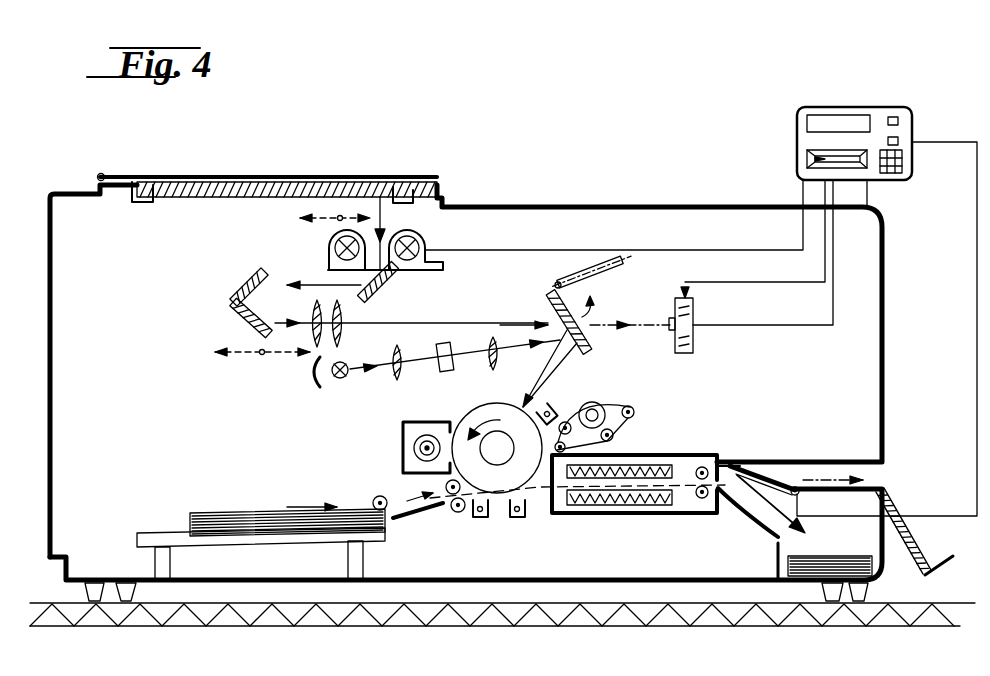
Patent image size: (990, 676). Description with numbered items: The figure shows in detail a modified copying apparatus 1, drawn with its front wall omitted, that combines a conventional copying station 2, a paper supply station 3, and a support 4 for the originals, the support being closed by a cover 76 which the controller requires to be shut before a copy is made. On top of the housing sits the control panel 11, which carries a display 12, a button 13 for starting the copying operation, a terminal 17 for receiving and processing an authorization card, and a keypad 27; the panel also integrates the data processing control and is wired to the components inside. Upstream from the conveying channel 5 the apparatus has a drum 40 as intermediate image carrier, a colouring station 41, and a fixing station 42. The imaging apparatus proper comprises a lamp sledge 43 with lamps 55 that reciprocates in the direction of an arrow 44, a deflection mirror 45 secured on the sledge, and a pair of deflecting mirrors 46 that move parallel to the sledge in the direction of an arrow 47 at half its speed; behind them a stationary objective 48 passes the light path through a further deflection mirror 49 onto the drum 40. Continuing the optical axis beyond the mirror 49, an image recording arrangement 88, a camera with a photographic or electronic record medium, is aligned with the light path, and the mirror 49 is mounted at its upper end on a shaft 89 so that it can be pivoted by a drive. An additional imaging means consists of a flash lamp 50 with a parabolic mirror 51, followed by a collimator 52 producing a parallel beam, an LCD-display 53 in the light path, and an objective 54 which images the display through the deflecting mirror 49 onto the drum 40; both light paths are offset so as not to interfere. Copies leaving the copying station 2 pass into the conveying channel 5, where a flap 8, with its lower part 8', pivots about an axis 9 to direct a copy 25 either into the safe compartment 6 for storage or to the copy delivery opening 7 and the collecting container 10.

The copying apparatus 1 is at (500, 120).
The copying station 2 is at (518, 239).
The paper supply station 3 is at (196, 518).
The support 4 is at (282, 192).
The conveying channel 5 is at (728, 465).
The safe compartment 6 is at (777, 538).
The copy delivery opening 7 is at (887, 464).
The flap 8 is at (762, 458).
The deflector guide lower part 8' is at (764, 460).
The axis 9 is at (800, 496).
The collecting container 10 is at (953, 560).
The control panel 11 is at (908, 107).
The display 12 is at (836, 115).
The button 13 is at (899, 121).
The terminal 17 is at (807, 160).
The copy 25 is at (832, 556).
The keypad 27 is at (902, 160).
The drum 40 is at (520, 478).
The colouring station 41 is at (403, 450).
The fixing station 42 is at (645, 508).
The lamp sledge 43 is at (400, 272).
The arrow 44 is at (320, 225).
The deflection mirror 45 is at (375, 296).
The pair of deflecting mirrors 46 is at (243, 283).
The arrow 47 is at (245, 355).
The objective 48 is at (341, 330).
The deflection mirror 49 is at (550, 305).
The flash lamp 50 is at (340, 380).
The parabolic mirror 51 is at (318, 385).
The collimator 52 is at (397, 381).
The LCD-display 53 is at (446, 372).
The objective 54 is at (493, 371).
The lamps 55 is at (410, 236).
The cover 76 is at (163, 178).
The image recording arrangement 88 is at (694, 331).
The shaft 89 is at (557, 281).